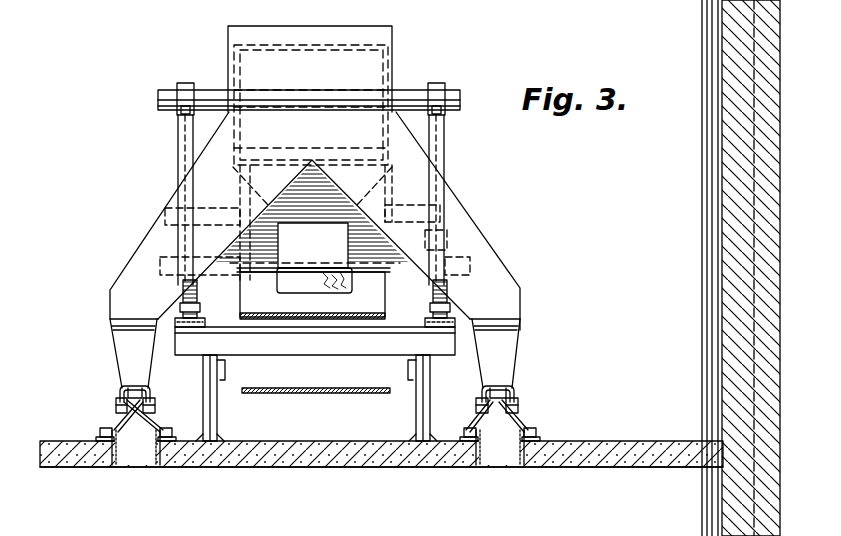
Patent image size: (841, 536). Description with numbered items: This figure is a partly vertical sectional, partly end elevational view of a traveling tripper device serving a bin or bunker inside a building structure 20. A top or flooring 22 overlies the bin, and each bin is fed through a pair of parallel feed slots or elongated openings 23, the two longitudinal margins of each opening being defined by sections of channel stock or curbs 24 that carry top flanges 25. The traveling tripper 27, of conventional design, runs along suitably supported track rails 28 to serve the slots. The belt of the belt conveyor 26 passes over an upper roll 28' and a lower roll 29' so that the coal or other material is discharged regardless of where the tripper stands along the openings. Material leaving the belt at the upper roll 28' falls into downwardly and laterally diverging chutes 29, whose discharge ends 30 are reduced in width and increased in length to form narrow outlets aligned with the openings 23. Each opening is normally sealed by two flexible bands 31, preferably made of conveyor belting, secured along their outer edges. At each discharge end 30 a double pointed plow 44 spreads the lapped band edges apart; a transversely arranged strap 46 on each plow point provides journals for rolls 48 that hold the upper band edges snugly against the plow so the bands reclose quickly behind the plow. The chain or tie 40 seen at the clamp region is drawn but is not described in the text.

The building structure 20 is at (698, 295).
The top or flooring 22 is at (612, 441).
The feed slot or elongated opening 23 is at (135, 458).
The channel stock or curb 24 is at (116, 452).
The top flange 25 is at (100, 432).
The belt conveyor 26 is at (346, 328).
The traveling tripper 27 is at (173, 155).
The track rail 28 is at (315, 303).
The upper roll 28' is at (309, 95).
The chute 29 is at (306, 221).
The roll 29' is at (310, 234).
The discharge end of chute 30 is at (120, 388).
The flexible band 31 is at (116, 409).
The chain 40 is at (150, 404).
The double pointed plow 44 is at (140, 393).
The strap 46 is at (146, 394).
The roll 48 is at (518, 404).